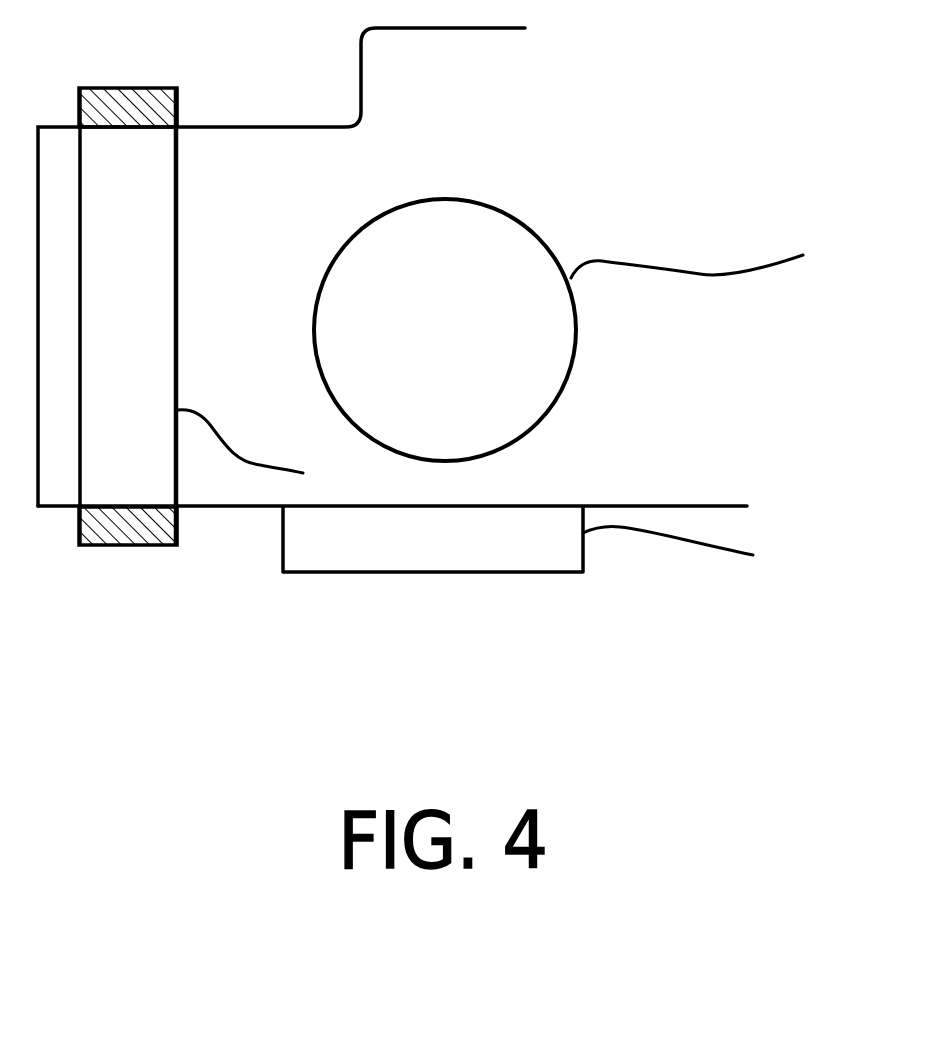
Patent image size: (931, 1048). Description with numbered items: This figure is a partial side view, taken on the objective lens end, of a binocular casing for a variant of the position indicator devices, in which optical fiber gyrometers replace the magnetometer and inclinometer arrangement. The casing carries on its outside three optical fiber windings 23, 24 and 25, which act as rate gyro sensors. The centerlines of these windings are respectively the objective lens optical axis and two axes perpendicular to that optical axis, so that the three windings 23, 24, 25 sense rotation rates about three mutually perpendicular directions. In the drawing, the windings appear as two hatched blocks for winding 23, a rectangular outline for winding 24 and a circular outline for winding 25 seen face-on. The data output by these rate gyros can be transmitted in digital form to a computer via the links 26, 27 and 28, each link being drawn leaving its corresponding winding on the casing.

The optical fiber winding 23 is at (142, 545).
The optical fiber winding 24 is at (578, 575).
The optical fiber winding 25 is at (575, 353).
The link 26 is at (257, 465).
The link 27 is at (717, 547).
The link 28 is at (667, 268).